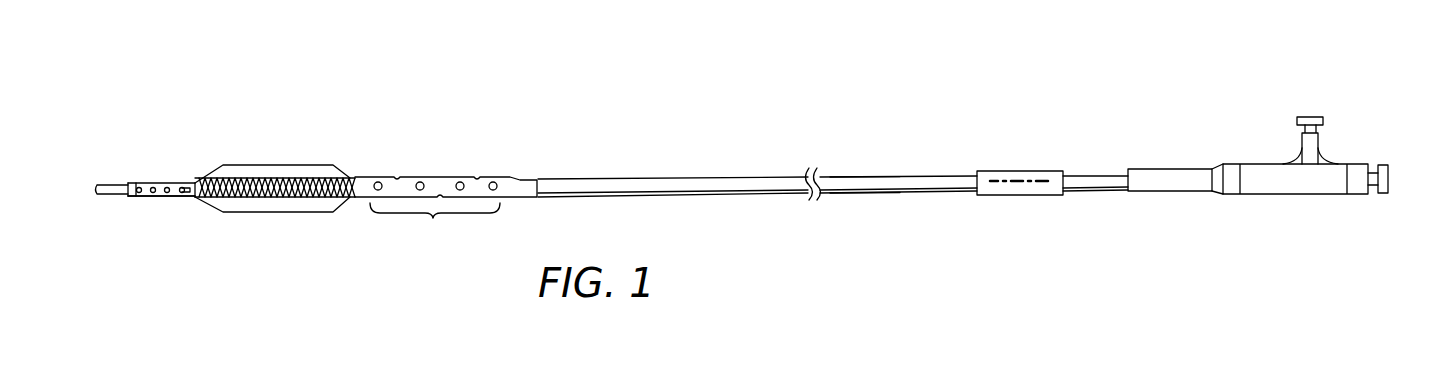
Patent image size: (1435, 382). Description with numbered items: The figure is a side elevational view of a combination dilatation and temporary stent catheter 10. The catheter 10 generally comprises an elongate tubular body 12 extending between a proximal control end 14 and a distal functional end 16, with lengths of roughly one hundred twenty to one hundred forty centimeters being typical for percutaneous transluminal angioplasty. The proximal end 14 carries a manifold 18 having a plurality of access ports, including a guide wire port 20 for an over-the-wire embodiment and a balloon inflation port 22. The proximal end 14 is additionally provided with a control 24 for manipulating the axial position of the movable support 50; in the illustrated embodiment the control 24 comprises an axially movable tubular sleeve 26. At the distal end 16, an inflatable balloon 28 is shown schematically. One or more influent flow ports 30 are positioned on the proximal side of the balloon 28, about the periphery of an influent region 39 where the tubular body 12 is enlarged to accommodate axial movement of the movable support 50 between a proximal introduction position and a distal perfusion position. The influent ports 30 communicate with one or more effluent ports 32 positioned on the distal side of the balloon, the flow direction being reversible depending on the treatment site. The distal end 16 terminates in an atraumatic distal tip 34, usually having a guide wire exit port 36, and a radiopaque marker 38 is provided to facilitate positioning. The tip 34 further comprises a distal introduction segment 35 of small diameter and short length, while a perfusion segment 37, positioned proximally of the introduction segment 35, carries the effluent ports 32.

The combination dilatation and temporary stent catheter 10 is at (600, 158).
The elongate tubular body 12 is at (855, 183).
The proximal control end 14 is at (1200, 117).
The distal functional end 16 is at (224, 125).
The manifold 18 is at (1253, 183).
The guide wire port 20 is at (1388, 177).
The balloon inflation port 22 is at (1307, 115).
The control 24 is at (1024, 220).
The axially movable tubular sleeve 26 is at (1040, 172).
The inflatable balloon 28 is at (311, 164).
The influent flow ports 30 is at (460, 181).
The effluent ports 32 is at (182, 194).
The atraumatic distal tip 34 is at (135, 207).
The distal introduction segment 35 is at (115, 185).
The guide wire exit port 36 is at (103, 194).
The perfusion segment 37 is at (155, 182).
The radiopaque marker 38 is at (137, 185).
The influent region 39 is at (435, 226).
The movable support 50 is at (258, 200).